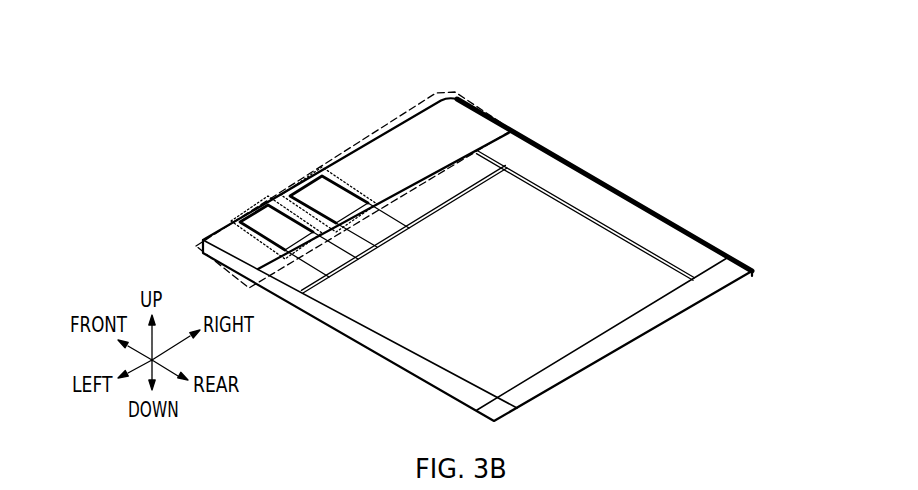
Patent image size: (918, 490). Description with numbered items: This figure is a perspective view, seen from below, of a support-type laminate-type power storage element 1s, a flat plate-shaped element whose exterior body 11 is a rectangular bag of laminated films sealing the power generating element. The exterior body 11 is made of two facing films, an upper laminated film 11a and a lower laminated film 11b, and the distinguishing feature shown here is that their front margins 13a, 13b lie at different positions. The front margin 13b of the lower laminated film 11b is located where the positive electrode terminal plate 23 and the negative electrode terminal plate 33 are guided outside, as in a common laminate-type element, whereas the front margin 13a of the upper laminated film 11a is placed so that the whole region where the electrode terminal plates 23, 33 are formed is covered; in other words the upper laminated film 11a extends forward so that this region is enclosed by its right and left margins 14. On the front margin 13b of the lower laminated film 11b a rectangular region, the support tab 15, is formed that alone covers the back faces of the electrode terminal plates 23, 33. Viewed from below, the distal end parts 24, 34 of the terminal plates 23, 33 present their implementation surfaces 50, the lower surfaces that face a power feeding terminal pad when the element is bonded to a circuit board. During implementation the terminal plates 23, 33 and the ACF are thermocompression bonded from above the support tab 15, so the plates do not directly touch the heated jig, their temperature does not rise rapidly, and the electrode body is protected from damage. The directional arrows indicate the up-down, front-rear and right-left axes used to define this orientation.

The support-type laminate-type power storage element 1s is at (556, 74).
The exterior body 11 is at (491, 245).
The upper laminated film 11a is at (457, 115).
The lower laminated film 11b is at (617, 204).
The front margin of the upper laminated film 13a is at (389, 122).
The front margin of the lower laminated film 13b is at (455, 143).
The right and left margins 14 is at (603, 170).
The support tab 15 is at (445, 87).
The positive electrode terminal plate 23 is at (265, 237).
The distal end part of the positive electrode terminal plate 24 is at (245, 222).
The negative electrode terminal plate 33 is at (334, 202).
The distal end part of the negative electrode terminal plate 34 is at (333, 176).
The implementation surface 50 is at (277, 250).